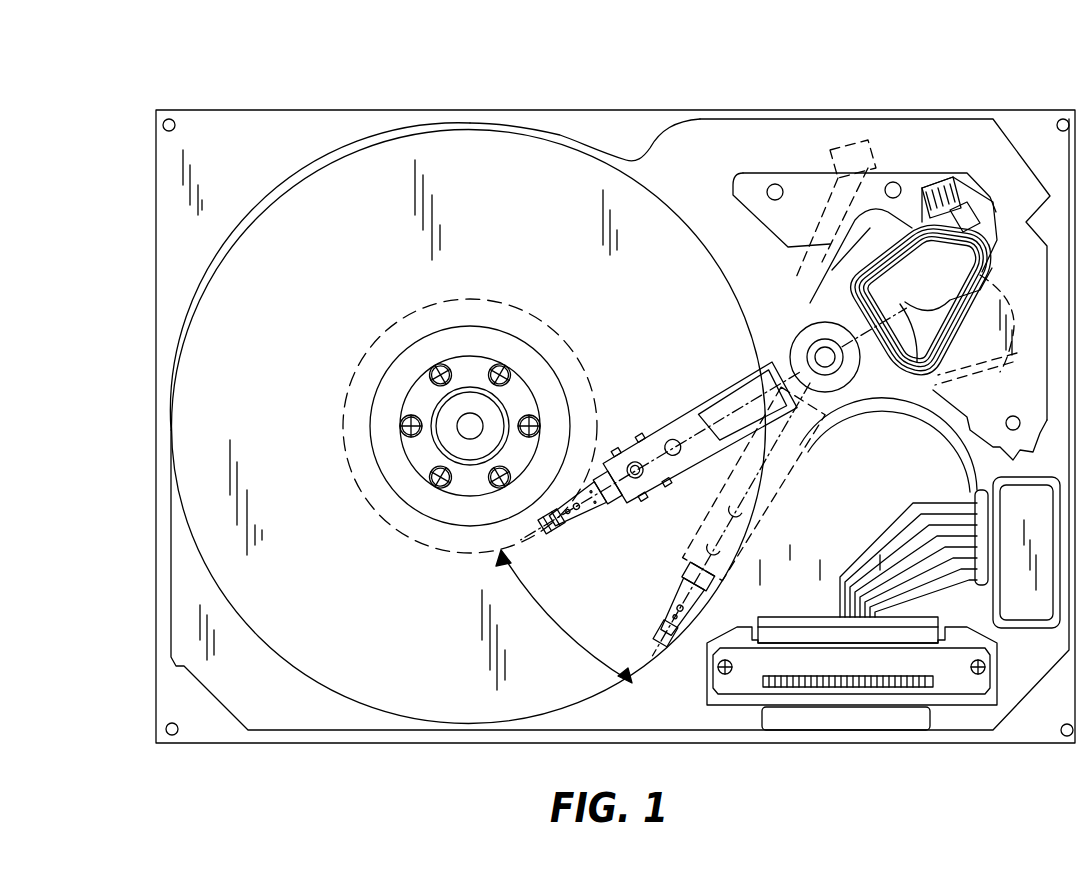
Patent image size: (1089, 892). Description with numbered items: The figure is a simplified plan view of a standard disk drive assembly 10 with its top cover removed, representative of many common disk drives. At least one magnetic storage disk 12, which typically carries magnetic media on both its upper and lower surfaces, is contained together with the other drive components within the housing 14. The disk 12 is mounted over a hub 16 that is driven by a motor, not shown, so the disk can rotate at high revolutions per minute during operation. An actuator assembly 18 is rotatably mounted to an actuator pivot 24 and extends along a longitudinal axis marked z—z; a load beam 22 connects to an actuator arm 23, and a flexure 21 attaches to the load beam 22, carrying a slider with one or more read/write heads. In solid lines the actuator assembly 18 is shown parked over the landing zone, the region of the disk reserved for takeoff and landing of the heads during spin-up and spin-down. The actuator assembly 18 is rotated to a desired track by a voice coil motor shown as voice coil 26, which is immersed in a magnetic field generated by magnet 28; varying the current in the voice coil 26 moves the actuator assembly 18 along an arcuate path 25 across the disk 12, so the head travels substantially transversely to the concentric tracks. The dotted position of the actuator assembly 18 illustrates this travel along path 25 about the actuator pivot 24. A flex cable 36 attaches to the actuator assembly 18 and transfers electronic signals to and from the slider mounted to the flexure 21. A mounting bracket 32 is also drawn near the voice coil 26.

The disk drive assembly 10 is at (511, 92).
The magnetic storage disk 12 is at (318, 298).
The housing 14 is at (322, 110).
The hub 16 is at (400, 487).
The actuator assembly 18 is at (734, 439).
The flexure 21 is at (575, 529).
The load beam 22 is at (617, 504).
The actuator arm 23 is at (657, 448).
The actuator pivot 24 is at (815, 357).
The arcuate path 25 is at (543, 623).
The voice coil 26 is at (920, 210).
The magnet 28 is at (885, 200).
The mounting bracket 32 is at (760, 183).
The flex cable 36 is at (958, 446).